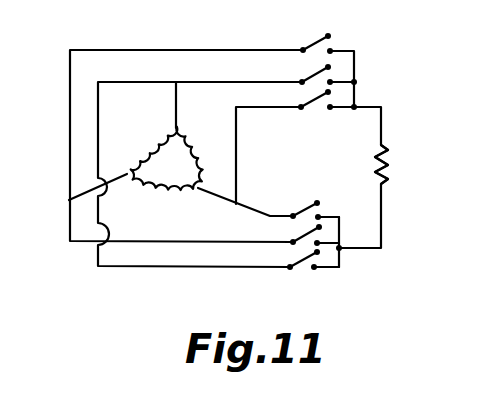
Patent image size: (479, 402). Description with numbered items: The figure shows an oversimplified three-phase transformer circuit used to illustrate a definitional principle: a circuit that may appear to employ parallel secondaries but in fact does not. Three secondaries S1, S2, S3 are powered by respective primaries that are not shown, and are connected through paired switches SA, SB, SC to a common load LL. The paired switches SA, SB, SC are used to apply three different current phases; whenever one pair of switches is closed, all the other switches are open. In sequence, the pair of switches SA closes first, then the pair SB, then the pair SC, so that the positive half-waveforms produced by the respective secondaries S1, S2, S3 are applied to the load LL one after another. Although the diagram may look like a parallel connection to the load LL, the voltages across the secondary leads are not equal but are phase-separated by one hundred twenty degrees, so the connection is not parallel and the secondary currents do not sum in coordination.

The secondary S1 is at (194, 150).
The secondary S2 is at (152, 188).
The secondary S3 is at (151, 144).
The pair of switches SA is at (312, 68).
The pair of switches SB is at (312, 95).
The pair of switches SC is at (306, 40).
The load LL is at (408, 164).